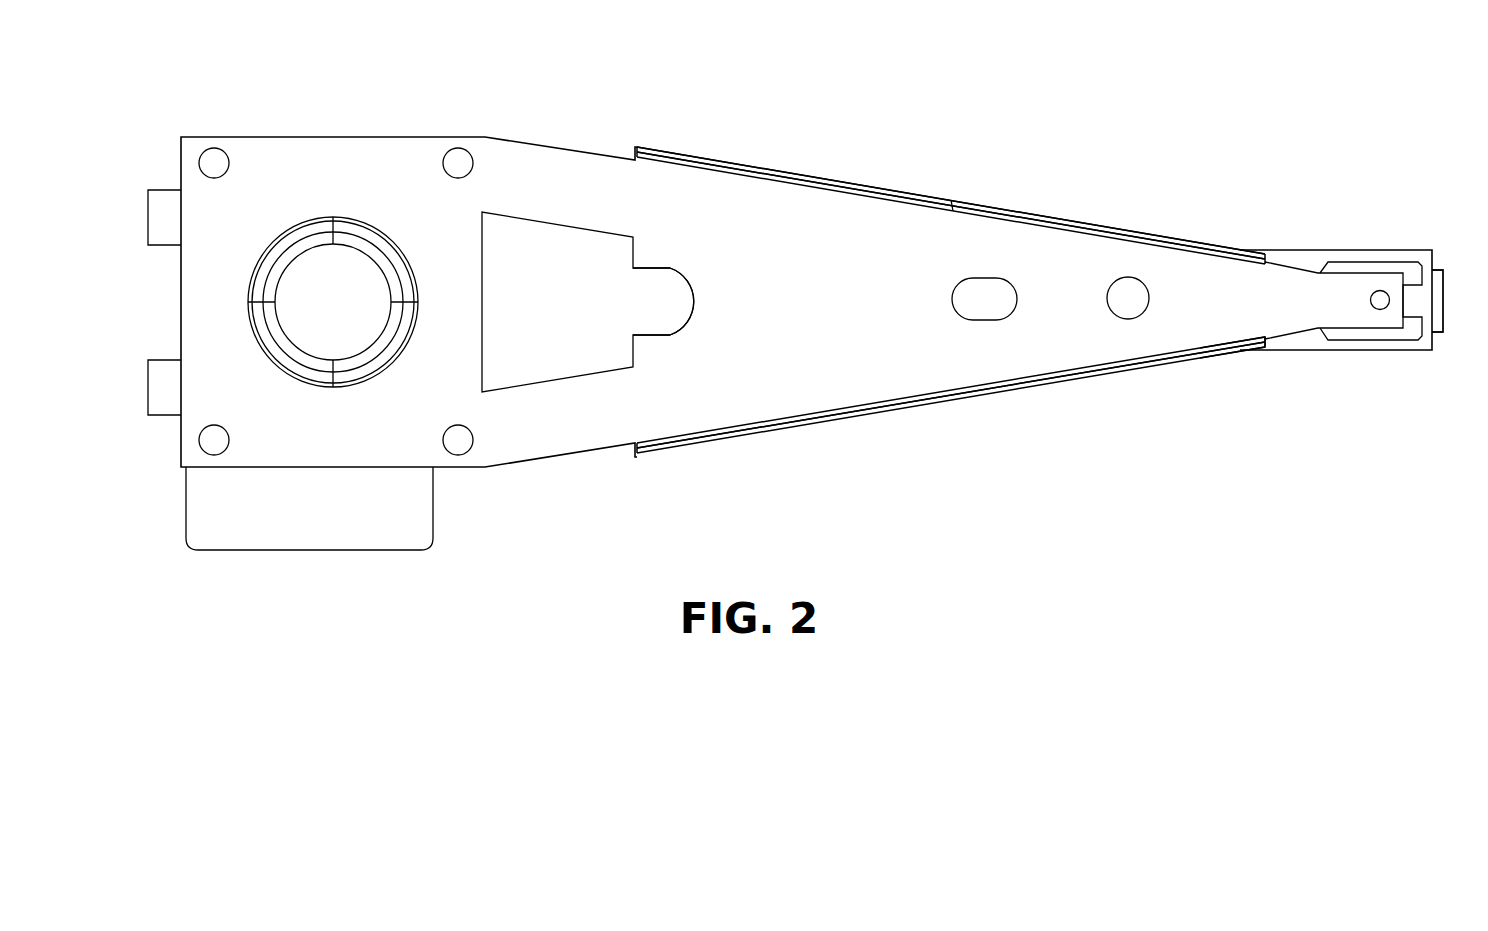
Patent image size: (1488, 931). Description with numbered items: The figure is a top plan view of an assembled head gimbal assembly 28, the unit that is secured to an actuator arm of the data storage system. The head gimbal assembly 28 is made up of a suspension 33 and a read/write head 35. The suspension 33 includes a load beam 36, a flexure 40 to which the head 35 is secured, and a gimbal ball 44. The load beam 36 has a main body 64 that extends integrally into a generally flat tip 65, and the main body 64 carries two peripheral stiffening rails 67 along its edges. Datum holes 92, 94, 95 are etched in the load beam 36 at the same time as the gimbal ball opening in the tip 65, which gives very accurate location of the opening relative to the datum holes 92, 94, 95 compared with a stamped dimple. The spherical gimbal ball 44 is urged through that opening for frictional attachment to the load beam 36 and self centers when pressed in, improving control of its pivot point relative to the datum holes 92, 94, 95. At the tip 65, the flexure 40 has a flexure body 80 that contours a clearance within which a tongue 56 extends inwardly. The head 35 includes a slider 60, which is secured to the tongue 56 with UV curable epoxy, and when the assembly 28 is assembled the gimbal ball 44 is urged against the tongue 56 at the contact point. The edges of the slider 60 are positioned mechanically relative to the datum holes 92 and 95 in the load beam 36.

The head gimbal assembly 28 is at (795, 45).
The load beam 36 is at (683, 148).
The suspension 33 is at (902, 177).
The peripheral stiffening rails 67 is at (803, 172).
The main body 64 is at (992, 363).
The flexure 40 is at (1257, 369).
The datum hole 94 is at (982, 292).
The datum hole 92 is at (1122, 298).
The datum hole 95 is at (657, 303).
The flexure body 80 is at (1307, 257).
The gimbal ball 44 is at (1380, 296).
The slider 60 is at (1443, 297).
The read/write head 35 is at (1456, 332).
The tip 65 is at (1347, 303).
The tongue 56 is at (1413, 300).